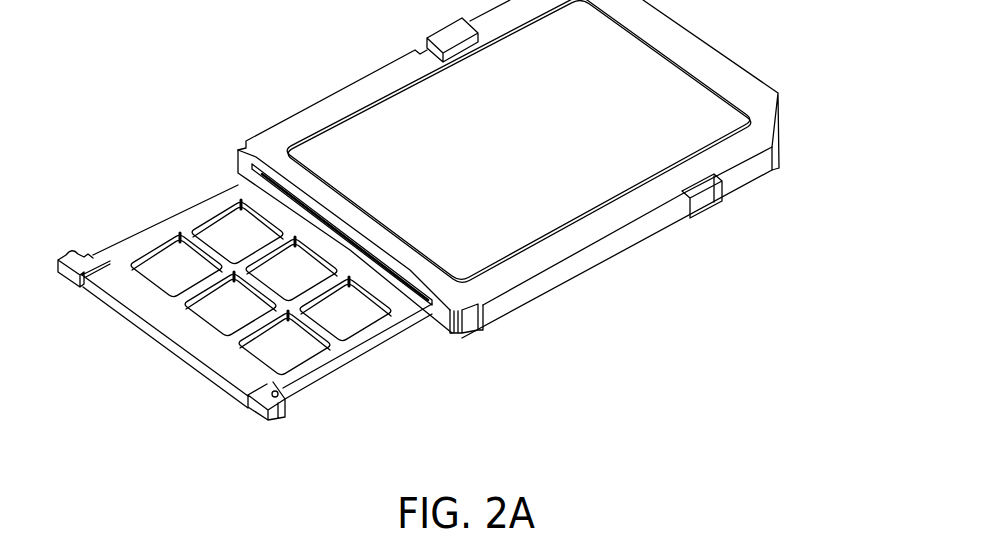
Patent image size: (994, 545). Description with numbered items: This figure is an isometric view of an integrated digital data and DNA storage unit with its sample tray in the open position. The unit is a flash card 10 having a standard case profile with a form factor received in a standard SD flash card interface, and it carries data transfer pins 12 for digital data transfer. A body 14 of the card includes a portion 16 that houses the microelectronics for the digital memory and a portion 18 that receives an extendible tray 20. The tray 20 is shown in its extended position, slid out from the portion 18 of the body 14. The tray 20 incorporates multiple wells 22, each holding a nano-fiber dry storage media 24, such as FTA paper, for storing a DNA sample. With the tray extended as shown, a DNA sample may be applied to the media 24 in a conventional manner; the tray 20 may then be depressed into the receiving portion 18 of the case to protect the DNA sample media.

The flash card 10 is at (435, 210).
The data transfer pins 12 is at (727, 53).
The body 14 is at (347, 88).
The portion for the microelectronics 16 is at (697, 127).
The portion receiving an extendible tray 18 is at (460, 230).
The extendible tray 20 is at (223, 277).
The wells 22 is at (222, 212).
The nano-fiber dry storage media 24 is at (173, 270).